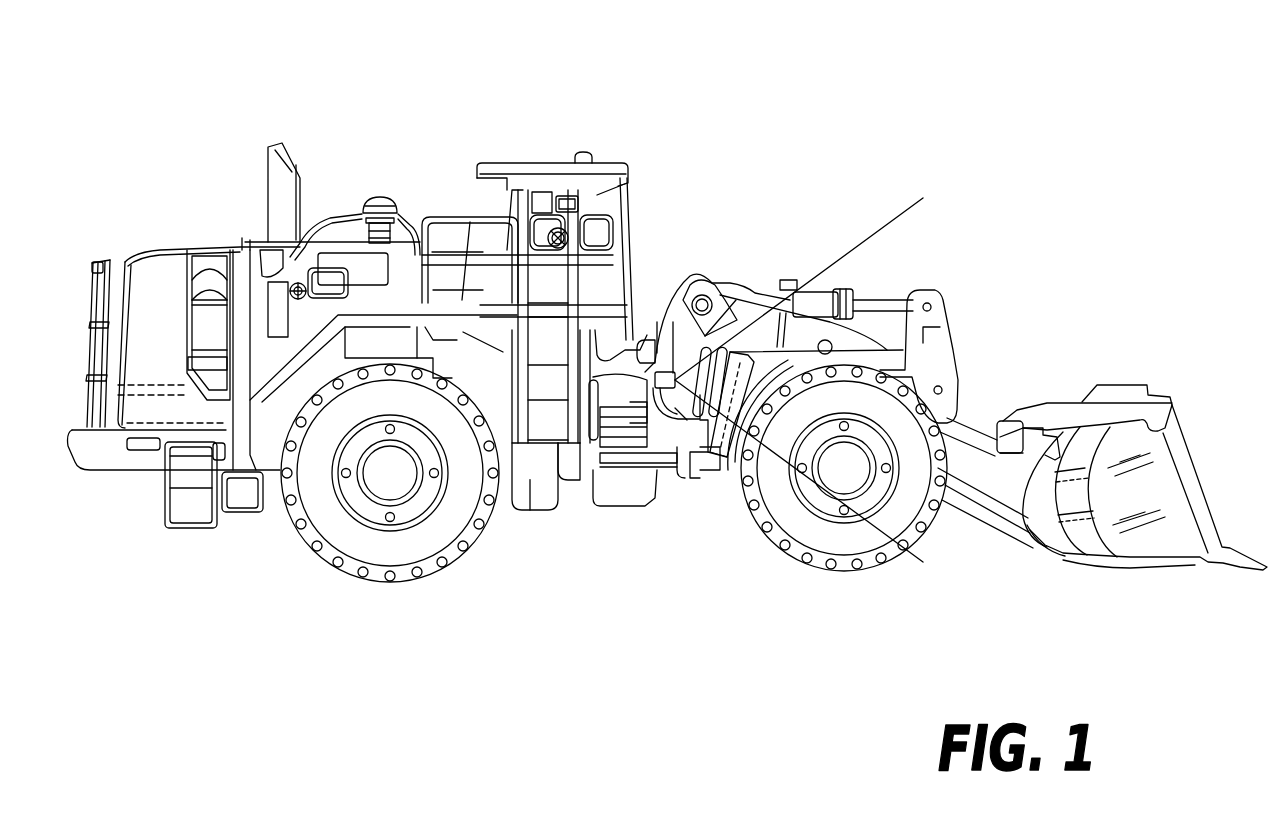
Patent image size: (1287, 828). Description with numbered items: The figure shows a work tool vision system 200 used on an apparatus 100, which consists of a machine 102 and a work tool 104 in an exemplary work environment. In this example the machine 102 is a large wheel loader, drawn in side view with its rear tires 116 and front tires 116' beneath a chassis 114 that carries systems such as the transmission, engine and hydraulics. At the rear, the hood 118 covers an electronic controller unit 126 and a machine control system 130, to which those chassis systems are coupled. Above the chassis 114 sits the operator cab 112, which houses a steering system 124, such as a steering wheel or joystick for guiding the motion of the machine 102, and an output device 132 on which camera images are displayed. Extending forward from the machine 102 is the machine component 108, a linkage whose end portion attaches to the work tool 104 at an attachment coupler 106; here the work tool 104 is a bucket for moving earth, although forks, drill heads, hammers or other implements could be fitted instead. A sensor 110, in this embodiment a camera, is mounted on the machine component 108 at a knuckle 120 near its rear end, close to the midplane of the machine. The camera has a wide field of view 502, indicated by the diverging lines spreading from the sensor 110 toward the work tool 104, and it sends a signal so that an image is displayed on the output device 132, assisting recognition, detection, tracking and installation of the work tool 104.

The apparatus 100 is at (933, 123).
The work tool vision system 200 is at (646, 233).
The machine 102 is at (688, 265).
The work tool 104 is at (1170, 484).
The attachment coupler 106 is at (1043, 527).
The machine component 108 is at (943, 348).
The sensor 110 is at (646, 430).
The operator cab 112 is at (501, 165).
The chassis 114 is at (499, 485).
The tires 116 is at (390, 520).
The tires 116' is at (844, 502).
The hood 118 is at (158, 276).
The knuckle 120 is at (688, 450).
The steering system 124 is at (551, 225).
The electronic controller unit 126 is at (338, 268).
The machine control system 130 is at (283, 287).
The output device 132 is at (575, 198).
The wide field of view 502 is at (878, 248).